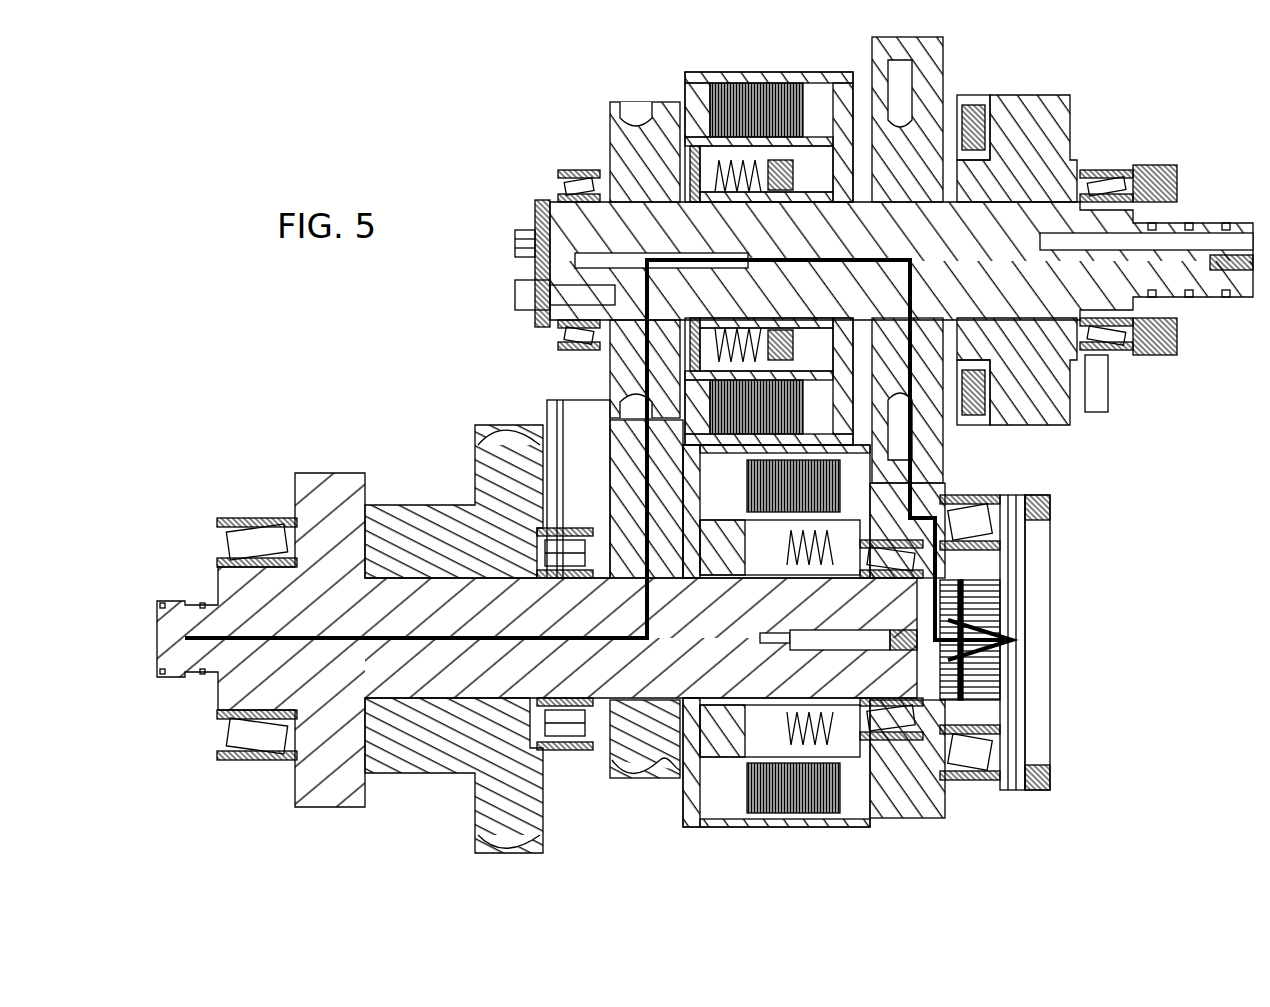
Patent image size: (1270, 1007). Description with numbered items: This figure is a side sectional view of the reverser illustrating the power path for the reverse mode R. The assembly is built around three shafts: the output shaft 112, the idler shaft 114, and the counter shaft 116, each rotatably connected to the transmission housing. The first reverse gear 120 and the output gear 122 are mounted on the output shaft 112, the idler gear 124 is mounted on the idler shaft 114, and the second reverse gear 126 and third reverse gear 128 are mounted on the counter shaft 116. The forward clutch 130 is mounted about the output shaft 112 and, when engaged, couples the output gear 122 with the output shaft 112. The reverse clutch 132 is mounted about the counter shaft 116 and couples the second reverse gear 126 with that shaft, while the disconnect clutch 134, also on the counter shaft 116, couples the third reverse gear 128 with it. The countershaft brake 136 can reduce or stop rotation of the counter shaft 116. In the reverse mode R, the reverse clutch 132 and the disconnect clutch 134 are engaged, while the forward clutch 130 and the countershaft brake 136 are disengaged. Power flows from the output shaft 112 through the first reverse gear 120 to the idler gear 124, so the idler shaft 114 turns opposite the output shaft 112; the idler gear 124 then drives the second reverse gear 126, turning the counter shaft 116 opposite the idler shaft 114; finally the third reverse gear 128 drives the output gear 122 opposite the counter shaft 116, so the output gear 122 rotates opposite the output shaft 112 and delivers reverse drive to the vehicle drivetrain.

The output shaft 112 is at (258, 627).
The idler shaft 114 is at (623, 453).
The counter shaft 116 is at (590, 228).
The first reverse gear 120 is at (645, 730).
The output gear 122 is at (913, 770).
The idler gear 124 is at (583, 472).
The second reverse gear 126 is at (652, 145).
The third reverse gear 128 is at (932, 90).
The forward clutch 130 is at (798, 823).
The reverse clutch 132 is at (761, 85).
The disconnect clutch 134 is at (1017, 167).
The countershaft brake 136 is at (1100, 398).
The reverse mode R is at (420, 633).